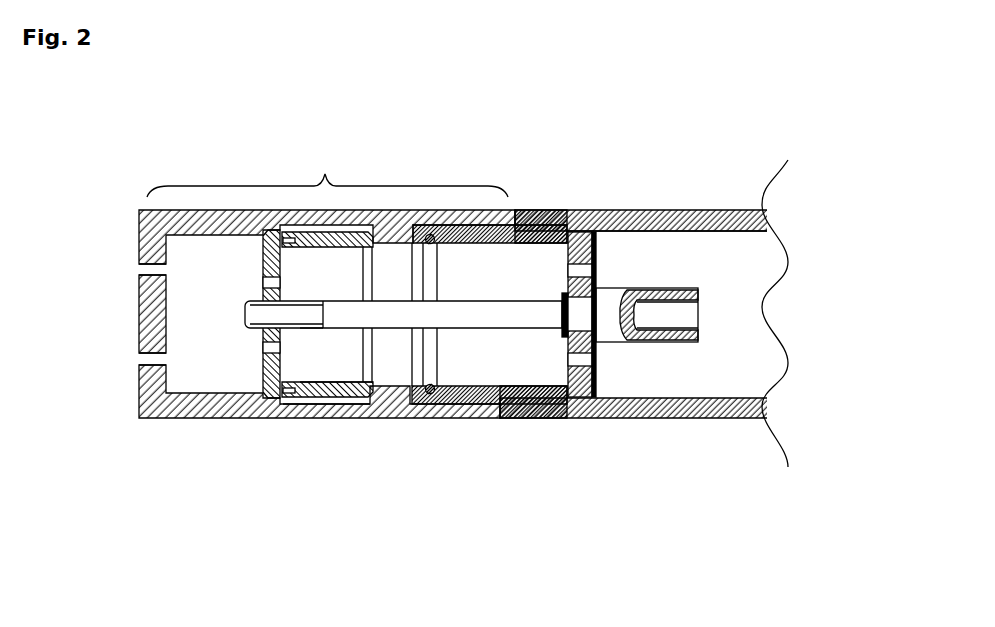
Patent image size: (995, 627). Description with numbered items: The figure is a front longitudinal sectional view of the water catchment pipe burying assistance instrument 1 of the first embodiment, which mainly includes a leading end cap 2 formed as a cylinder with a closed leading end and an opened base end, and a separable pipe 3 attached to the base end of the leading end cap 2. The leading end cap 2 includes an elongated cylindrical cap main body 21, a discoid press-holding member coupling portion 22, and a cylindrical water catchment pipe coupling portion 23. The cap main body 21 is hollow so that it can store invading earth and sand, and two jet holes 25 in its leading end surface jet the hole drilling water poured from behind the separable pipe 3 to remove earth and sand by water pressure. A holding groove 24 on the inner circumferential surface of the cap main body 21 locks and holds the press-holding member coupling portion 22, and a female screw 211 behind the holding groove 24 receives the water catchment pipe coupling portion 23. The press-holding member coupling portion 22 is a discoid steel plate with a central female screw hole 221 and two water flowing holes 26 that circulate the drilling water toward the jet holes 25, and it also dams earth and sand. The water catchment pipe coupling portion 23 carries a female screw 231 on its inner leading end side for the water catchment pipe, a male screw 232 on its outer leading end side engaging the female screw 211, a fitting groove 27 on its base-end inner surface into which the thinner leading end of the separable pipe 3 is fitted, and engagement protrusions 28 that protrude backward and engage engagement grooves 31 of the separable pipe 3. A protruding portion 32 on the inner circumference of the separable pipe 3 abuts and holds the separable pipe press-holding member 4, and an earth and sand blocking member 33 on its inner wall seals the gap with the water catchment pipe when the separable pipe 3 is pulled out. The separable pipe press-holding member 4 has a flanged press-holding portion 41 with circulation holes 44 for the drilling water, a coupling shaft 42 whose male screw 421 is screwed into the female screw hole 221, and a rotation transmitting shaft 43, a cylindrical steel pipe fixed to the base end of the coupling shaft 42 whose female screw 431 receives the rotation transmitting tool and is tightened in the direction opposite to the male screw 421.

The water catchment pipe burying assistance instrument 1 is at (106, 168).
The leading end cap 2 is at (327, 163).
The separable pipe 3 is at (700, 206).
The separable pipe press-holding member 4 is at (712, 330).
The cap main body 21 is at (165, 419).
The female screw 211 is at (330, 405).
The press-holding member coupling portion 22 is at (264, 371).
The female screw hole 221 is at (243, 315).
The water catchment pipe coupling portion 23 is at (401, 398).
The female screw 231 is at (360, 395).
The male screw 232 is at (336, 372).
The holding groove 24 is at (283, 400).
The jet holes 25 is at (138, 268).
The water flowing holes 26 is at (260, 283).
The fitting groove 27 is at (456, 405).
The engagement protrusions 28 is at (509, 410).
The engagement grooves 31 is at (516, 211).
The protruding portion 32 is at (614, 210).
The earth and sand blocking member 33 is at (557, 228).
The press-holding portion 41 is at (600, 385).
The coupling shaft 42 is at (533, 329).
The male screw 421 is at (306, 383).
The rotation transmitting shaft 43 is at (682, 343).
The female screw 431 is at (670, 305).
The circulation holes 44 is at (595, 362).